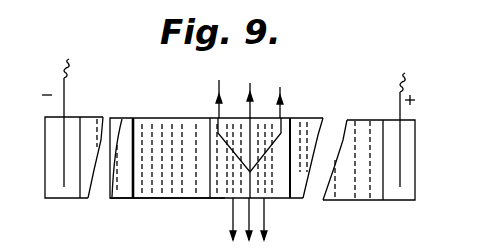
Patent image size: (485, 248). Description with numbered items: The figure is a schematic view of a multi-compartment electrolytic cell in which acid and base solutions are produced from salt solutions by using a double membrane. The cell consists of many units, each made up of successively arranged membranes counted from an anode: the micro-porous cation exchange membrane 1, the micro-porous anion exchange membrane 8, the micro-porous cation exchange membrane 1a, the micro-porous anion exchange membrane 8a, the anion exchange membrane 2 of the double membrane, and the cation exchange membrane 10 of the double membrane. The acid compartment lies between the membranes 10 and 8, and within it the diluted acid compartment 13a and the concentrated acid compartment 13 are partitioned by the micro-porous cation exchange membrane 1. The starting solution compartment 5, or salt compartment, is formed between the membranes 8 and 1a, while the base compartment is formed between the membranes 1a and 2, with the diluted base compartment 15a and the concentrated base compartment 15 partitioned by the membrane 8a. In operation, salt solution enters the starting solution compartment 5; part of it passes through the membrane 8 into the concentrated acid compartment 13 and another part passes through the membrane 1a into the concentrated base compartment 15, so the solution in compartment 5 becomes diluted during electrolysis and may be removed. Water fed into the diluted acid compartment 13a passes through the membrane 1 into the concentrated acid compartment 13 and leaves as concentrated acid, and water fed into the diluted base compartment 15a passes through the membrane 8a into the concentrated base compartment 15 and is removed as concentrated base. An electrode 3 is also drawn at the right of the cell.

The micro-porous cation exchange membrane 1 is at (193, 190).
The micro-porous cation exchange membrane 1a is at (162, 190).
The anion exchange membrane of the double membrane 2 is at (138, 135).
The electrode 3 is at (400, 179).
The starting solution compartment 5 is at (174, 137).
The micro-porous anion exchange membrane 8 is at (180, 190).
The micro-porous anion exchange membrane 8a is at (148, 190).
The cation exchange membrane of the double membrane 10 is at (131, 126).
The concentrated acid compartment 13 is at (190, 137).
The diluted acid compartment 13a is at (198, 186).
The concentrated base compartment 15 is at (158, 137).
The diluted base compartment 15a is at (145, 137).